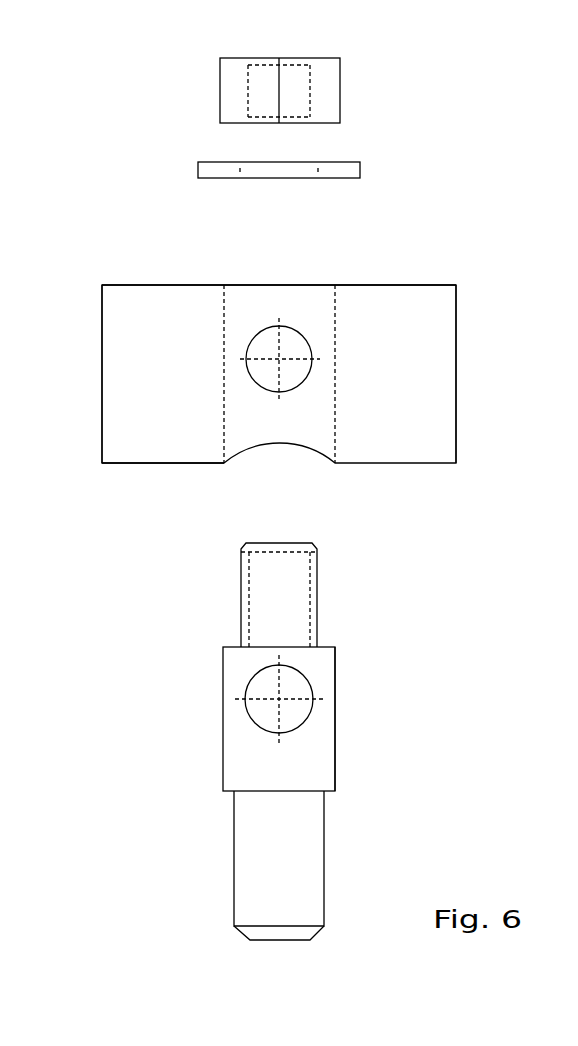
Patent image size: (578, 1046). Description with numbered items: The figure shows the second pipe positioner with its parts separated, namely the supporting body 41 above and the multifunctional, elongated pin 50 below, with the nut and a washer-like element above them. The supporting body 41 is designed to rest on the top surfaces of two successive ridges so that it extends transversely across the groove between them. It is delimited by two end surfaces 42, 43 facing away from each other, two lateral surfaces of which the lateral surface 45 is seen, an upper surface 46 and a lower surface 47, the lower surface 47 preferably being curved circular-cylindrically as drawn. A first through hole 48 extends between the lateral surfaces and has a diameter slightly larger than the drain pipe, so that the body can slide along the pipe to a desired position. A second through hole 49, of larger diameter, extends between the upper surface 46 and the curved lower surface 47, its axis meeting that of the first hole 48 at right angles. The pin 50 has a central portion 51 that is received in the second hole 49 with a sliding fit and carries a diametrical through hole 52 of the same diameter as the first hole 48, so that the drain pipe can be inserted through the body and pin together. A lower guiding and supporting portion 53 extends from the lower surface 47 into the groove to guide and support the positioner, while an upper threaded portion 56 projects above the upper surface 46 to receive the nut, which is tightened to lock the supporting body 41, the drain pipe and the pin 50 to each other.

The supporting body 41 is at (437, 407).
The end surface 42 is at (102, 378).
The end surface 43 is at (457, 359).
The lateral surface 45 is at (387, 308).
The upper surface 46 is at (135, 285).
The lower surface 47 is at (157, 463).
The first through hole 48 is at (290, 342).
The second through hole 49 is at (235, 295).
The multifunctional elongated pin 50 is at (335, 665).
The central portion 51 is at (335, 732).
The diametrical through hole 52 is at (265, 714).
The lower guiding and supporting portion 53 is at (324, 847).
The upper threaded portion 56 is at (318, 582).